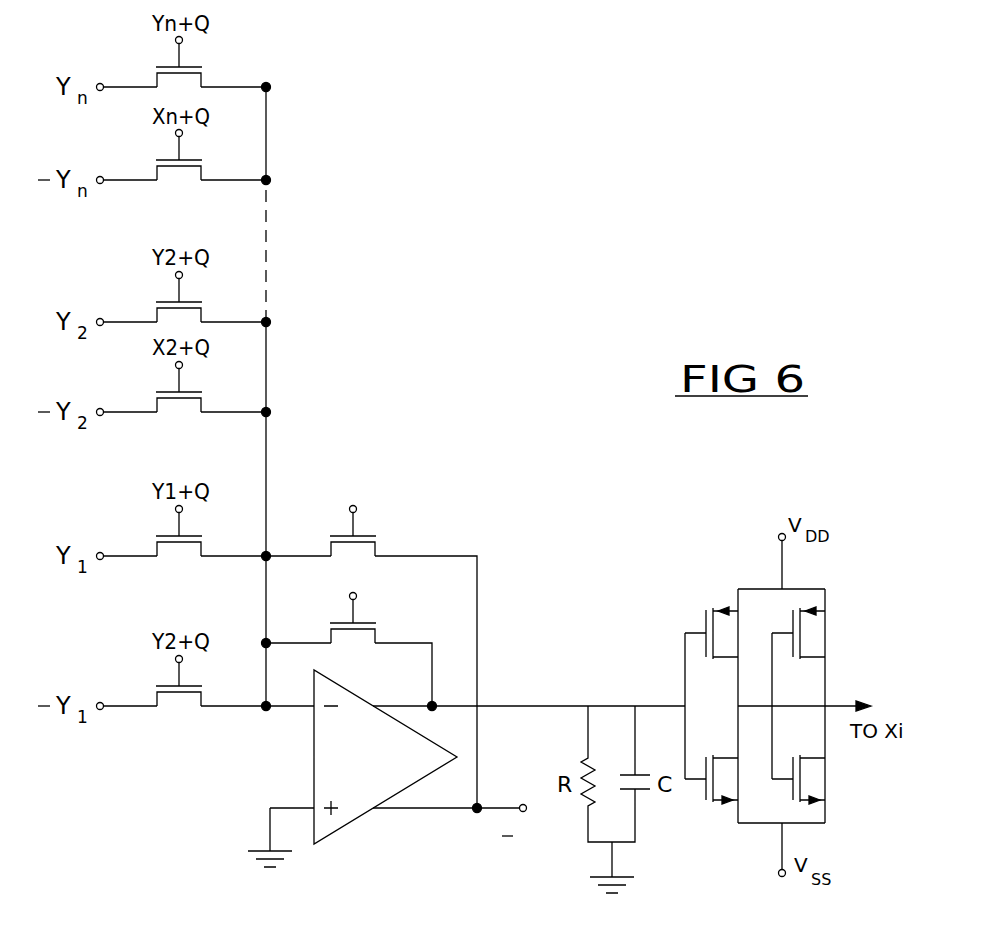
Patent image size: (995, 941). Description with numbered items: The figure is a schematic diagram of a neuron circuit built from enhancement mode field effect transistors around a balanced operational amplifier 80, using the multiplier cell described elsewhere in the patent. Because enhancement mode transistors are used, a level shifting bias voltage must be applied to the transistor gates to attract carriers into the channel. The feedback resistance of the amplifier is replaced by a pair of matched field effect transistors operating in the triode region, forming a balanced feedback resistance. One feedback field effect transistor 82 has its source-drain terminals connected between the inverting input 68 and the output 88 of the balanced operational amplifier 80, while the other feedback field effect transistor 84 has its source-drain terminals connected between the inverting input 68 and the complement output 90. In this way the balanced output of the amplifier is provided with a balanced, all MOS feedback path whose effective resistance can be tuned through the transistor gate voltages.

The inverting input 68 is at (288, 706).
The balanced operational amplifier 80 is at (340, 827).
The feedback field effect transistor 82 is at (360, 630).
The feedback field effect transistor 84 is at (373, 535).
The output 88 is at (507, 706).
The complement output 90 is at (443, 810).